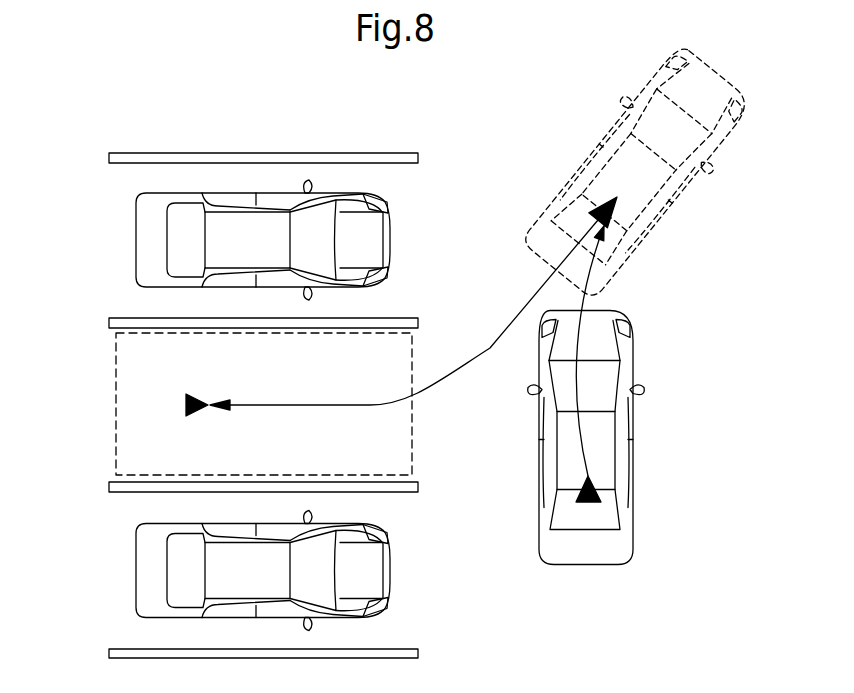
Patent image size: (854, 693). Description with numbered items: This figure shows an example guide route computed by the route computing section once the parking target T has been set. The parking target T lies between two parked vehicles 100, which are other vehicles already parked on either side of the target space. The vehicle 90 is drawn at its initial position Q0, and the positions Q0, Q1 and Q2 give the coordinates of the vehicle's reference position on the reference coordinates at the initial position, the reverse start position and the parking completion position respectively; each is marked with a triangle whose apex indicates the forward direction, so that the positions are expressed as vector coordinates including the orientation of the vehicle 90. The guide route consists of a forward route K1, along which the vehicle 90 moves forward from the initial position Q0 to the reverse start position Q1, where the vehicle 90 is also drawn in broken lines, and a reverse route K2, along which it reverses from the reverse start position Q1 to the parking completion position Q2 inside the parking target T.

The parked vehicle 100 is at (134, 238).
The vehicle 90 is at (600, 146).
The parking target T is at (113, 402).
The forward route K1 is at (586, 290).
The reverse route K2 is at (500, 333).
The initial position Q0 is at (590, 500).
The reverse start position Q1 is at (615, 206).
The parking completion position Q2 is at (185, 404).